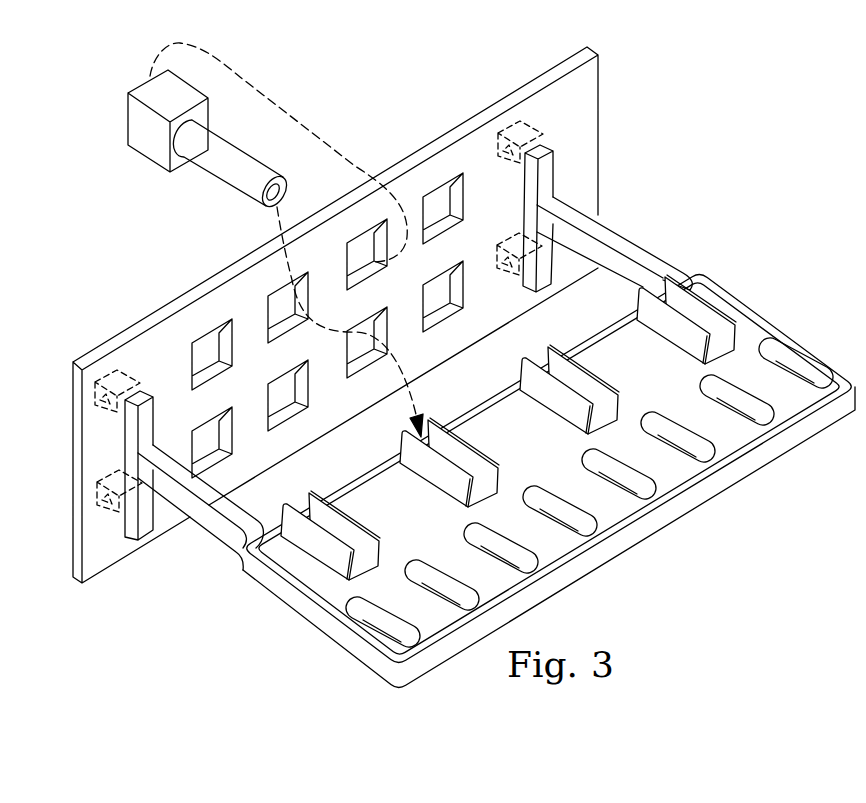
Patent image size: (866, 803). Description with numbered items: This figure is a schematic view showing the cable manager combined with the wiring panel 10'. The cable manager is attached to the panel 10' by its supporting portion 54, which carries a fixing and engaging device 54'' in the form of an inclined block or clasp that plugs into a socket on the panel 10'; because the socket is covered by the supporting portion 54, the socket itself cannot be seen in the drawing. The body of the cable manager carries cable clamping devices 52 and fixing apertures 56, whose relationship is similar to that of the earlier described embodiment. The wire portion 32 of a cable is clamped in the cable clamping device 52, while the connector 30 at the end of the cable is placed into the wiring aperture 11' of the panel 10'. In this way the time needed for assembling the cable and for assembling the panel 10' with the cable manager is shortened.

The panel 10' is at (335, 315).
The wiring aperture 11' is at (388, 196).
The connector 30 is at (157, 105).
The wire portion 32 is at (233, 168).
The cable clamping device 52 is at (328, 552).
The supporting portion 54 is at (141, 480).
The fixing and engaging device 54'' is at (288, 316).
The fixing aperture 56 is at (380, 624).